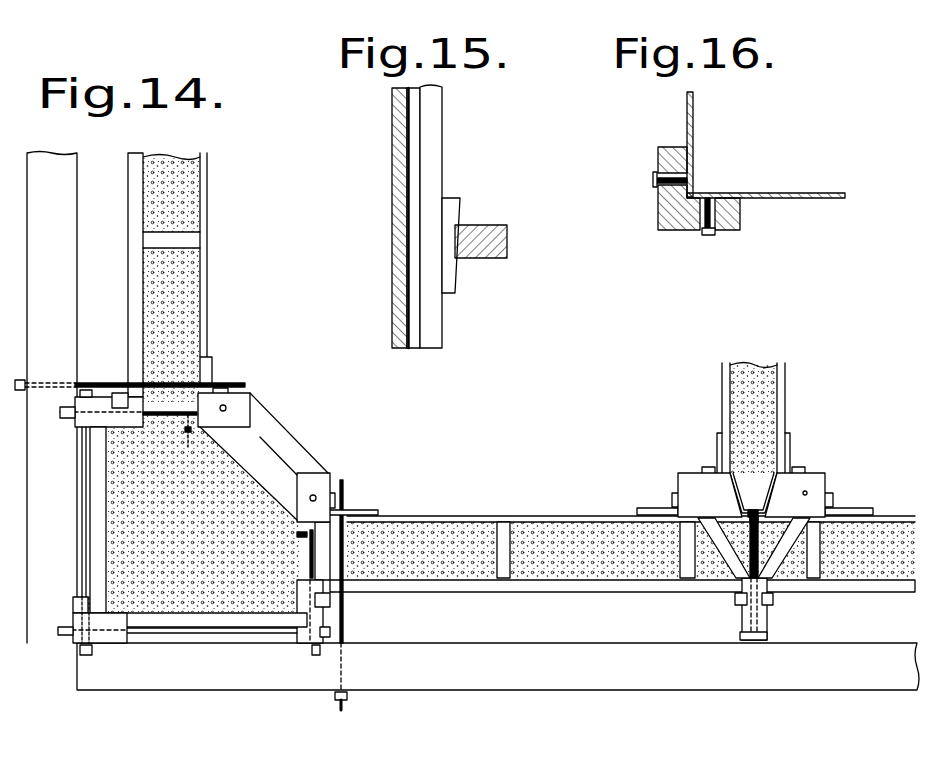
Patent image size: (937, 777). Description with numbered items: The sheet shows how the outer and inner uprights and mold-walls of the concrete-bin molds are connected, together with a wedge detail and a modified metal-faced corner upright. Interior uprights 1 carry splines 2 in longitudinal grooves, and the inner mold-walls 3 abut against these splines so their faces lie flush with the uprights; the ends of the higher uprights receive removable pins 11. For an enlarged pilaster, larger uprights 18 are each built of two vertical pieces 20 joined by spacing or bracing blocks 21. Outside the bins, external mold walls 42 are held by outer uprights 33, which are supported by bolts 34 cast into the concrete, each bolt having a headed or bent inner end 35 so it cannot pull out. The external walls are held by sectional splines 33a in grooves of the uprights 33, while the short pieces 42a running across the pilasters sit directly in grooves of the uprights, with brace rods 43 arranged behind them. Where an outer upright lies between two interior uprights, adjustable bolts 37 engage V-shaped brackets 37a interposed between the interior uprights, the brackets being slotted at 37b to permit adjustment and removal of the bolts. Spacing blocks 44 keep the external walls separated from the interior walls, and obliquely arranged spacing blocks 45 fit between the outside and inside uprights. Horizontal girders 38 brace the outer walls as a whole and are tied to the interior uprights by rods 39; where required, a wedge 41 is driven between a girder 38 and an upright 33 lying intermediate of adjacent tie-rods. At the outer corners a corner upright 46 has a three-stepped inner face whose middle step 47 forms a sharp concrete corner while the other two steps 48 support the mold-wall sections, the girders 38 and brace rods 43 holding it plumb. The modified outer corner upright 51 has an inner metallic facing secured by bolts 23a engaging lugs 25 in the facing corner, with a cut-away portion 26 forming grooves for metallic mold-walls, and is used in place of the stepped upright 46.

In FIG. 14, the uprights 1 is at (687, 478).
In FIG. 14, the splines 2 is at (240, 386).
In FIG. 15, the splines 2 is at (413, 143).
In FIG. 14, the inner mold-walls 3 is at (204, 275).
In FIG. 14, the pins 11 is at (253, 424).
In FIG. 14, the uprights 18 is at (264, 456).
In FIG. 14, the vertical pieces 20 is at (236, 408).
In FIG. 14, the spacing or bracing blocks 21 is at (293, 443).
In FIG. 16, the bolts 23a is at (700, 228).
In FIG. 16, the lugs 25 is at (710, 198).
In FIG. 16, the cut-away portion 26 is at (740, 202).
In FIG. 14, the uprights 33 is at (97, 397).
In FIG. 15, the uprights 33 is at (433, 170).
In FIG. 14, the splines 33a is at (120, 393).
In FIG. 14, the bolts 34 is at (168, 418).
In FIG. 14, the headed or bent inner end 35 is at (745, 510).
In FIG. 14, the adjustable bolts 37 is at (752, 557).
In FIG. 14, the V-shaped brackets 37a is at (777, 493).
In FIG. 14, the slots 37b is at (750, 523).
In FIG. 14, the horizontal girders 38 is at (65, 222).
In FIG. 15, the horizontal girders 38 is at (497, 237).
In FIG. 14, the rods 39 is at (15, 380).
In FIG. 14, the wedge 41 is at (765, 638).
In FIG. 15, the wedge 41 is at (450, 212).
In FIG. 14, the external mold walls 42 is at (135, 273).
In FIG. 15, the external mold walls 42 is at (393, 223).
In FIG. 16, the external mold walls 42 is at (687, 117).
In FIG. 14, the short pieces 42a is at (180, 652).
In FIG. 14, the brace rods 43 is at (86, 520).
In FIG. 14, the spacing blocks 44 is at (185, 232).
In FIG. 14, the obliquely arranged spacing blocks 45 is at (730, 548).
In FIG. 14, the corner upright 46 is at (103, 640).
In FIG. 14, the middle step 47 is at (103, 612).
In FIG. 14, the steps 48 is at (75, 607).
In FIG. 16, the outer corner upright 51 is at (665, 210).